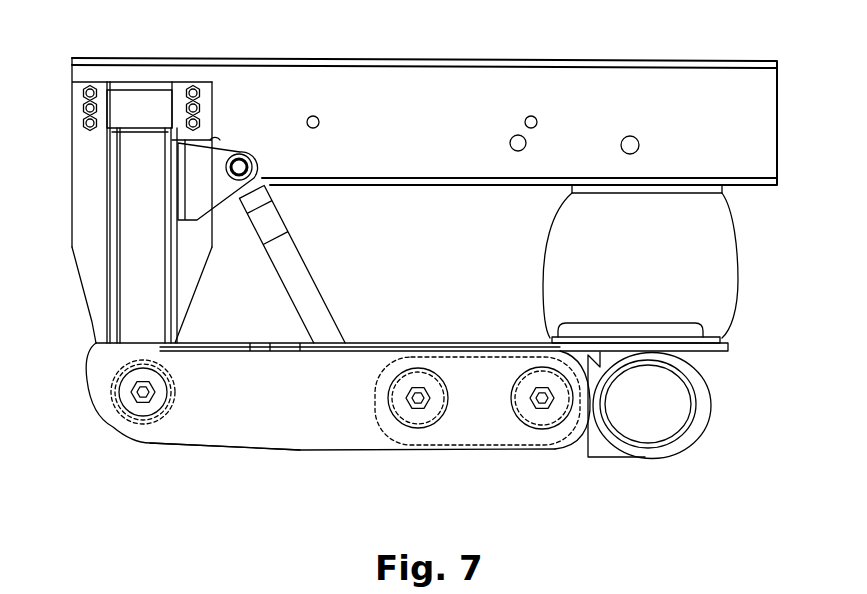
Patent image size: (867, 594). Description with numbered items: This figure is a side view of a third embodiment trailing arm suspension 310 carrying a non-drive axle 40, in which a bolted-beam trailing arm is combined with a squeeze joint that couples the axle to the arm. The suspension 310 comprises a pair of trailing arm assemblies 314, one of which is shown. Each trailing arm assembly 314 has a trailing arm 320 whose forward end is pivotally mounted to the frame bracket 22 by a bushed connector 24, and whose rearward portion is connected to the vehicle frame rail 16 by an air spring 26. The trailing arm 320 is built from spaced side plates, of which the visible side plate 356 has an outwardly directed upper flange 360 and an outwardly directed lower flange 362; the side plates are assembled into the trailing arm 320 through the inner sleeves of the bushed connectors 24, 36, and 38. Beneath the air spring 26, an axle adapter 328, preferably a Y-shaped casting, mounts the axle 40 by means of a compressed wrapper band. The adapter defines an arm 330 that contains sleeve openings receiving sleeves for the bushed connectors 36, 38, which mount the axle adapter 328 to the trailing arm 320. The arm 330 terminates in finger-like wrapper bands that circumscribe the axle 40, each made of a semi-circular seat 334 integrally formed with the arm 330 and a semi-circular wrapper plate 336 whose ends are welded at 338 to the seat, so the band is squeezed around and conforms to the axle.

The trailing arm suspension 310 is at (690, 31).
The vehicle frame rail 16 is at (776, 80).
The frame bracket 22 is at (92, 322).
The bushed connector 24 is at (117, 412).
The air spring 26 is at (737, 243).
The bushed connector 36 is at (398, 420).
The bushed connector 38 is at (535, 423).
The axle 40 is at (660, 430).
The trailing arm assembly 314 is at (716, 438).
The trailing arm 320 is at (552, 452).
The axle adapter 328 is at (708, 431).
The arm 330 is at (448, 445).
The semi-circular seat 334 is at (603, 438).
The semi-circular wrapper plate 336 is at (712, 407).
The weld 338 is at (647, 355).
The side plate 356 is at (237, 430).
The upper flange 360 is at (398, 342).
The lower flange 362 is at (295, 450).